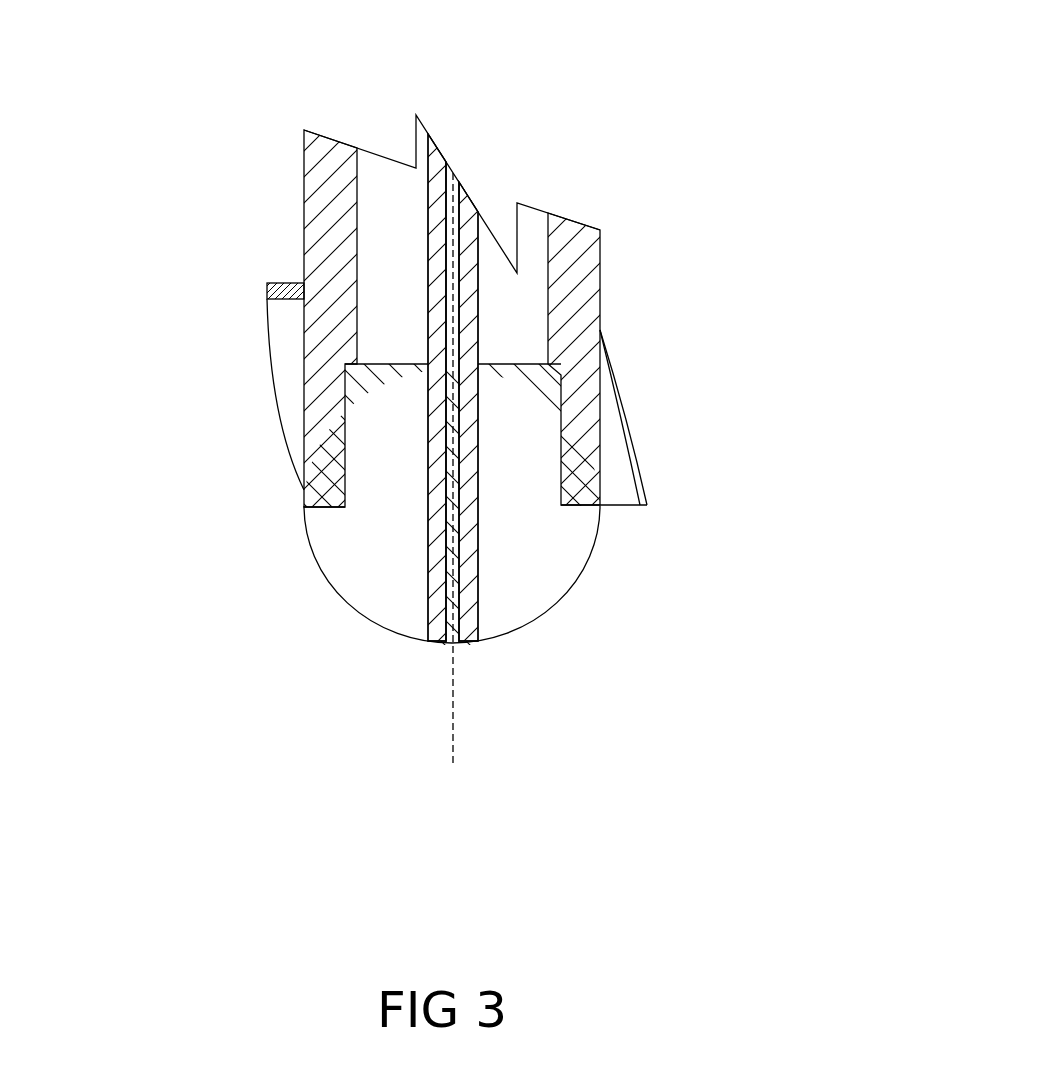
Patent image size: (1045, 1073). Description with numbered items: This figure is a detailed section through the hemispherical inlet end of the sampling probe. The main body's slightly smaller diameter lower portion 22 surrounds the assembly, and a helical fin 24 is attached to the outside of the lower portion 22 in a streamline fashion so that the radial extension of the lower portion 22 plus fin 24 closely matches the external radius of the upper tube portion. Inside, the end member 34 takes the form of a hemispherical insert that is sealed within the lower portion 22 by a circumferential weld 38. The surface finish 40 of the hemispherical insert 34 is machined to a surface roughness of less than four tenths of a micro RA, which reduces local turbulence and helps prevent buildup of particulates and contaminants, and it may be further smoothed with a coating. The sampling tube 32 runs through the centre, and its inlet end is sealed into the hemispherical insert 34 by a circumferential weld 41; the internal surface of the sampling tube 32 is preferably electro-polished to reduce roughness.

The lower portion 22 is at (600, 262).
The helical fin 24 is at (622, 476).
The sampling tube 32 is at (570, 323).
The end member 34 is at (370, 581).
The circumferential weld 38 is at (305, 510).
The surface finish 40 is at (618, 613).
The circumferential weld 41 is at (597, 500).